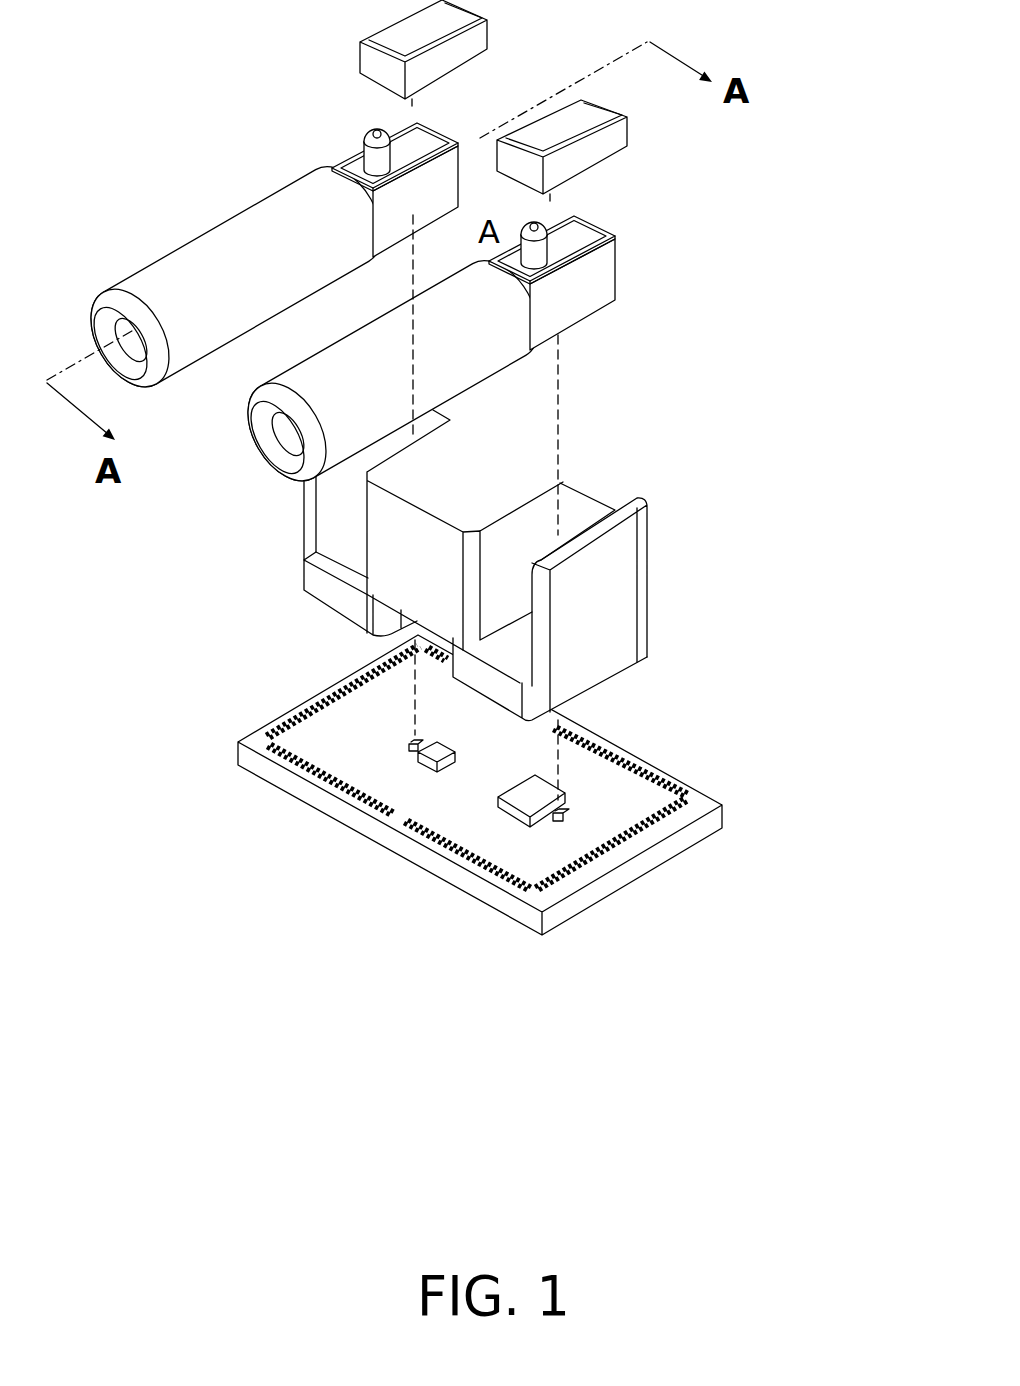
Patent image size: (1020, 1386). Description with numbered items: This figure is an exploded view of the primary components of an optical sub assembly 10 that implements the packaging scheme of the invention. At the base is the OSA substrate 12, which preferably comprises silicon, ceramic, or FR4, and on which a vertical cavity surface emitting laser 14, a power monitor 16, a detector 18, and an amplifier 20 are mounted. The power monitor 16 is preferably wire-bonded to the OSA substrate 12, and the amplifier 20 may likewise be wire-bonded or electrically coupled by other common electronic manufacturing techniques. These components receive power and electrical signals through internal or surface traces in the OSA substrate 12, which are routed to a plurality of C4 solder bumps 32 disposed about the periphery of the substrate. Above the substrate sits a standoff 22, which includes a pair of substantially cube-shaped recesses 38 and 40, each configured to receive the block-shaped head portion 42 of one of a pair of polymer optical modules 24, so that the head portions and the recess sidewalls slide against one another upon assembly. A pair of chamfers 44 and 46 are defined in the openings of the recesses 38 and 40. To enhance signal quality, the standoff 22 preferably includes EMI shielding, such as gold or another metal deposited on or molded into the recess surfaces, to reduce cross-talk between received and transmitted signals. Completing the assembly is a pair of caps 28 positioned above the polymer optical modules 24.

The optical sub assembly 10 is at (195, 1045).
The OSA substrate 12 is at (613, 877).
The vertical cavity surface emitting laser 14 is at (420, 741).
The power monitor 16 is at (430, 768).
The detector 18 is at (560, 818).
The amplifier 20 is at (523, 800).
The standoff 22 is at (439, 565).
The polymer optical module 24 is at (193, 247).
The cap 28 is at (478, 42).
The C4 solder bumps 32 is at (687, 803).
The recess 38 is at (573, 522).
The recess 40 is at (363, 467).
The head portion 42 is at (407, 220).
The chamfer 44 is at (472, 571).
The chamfer 46 is at (307, 511).